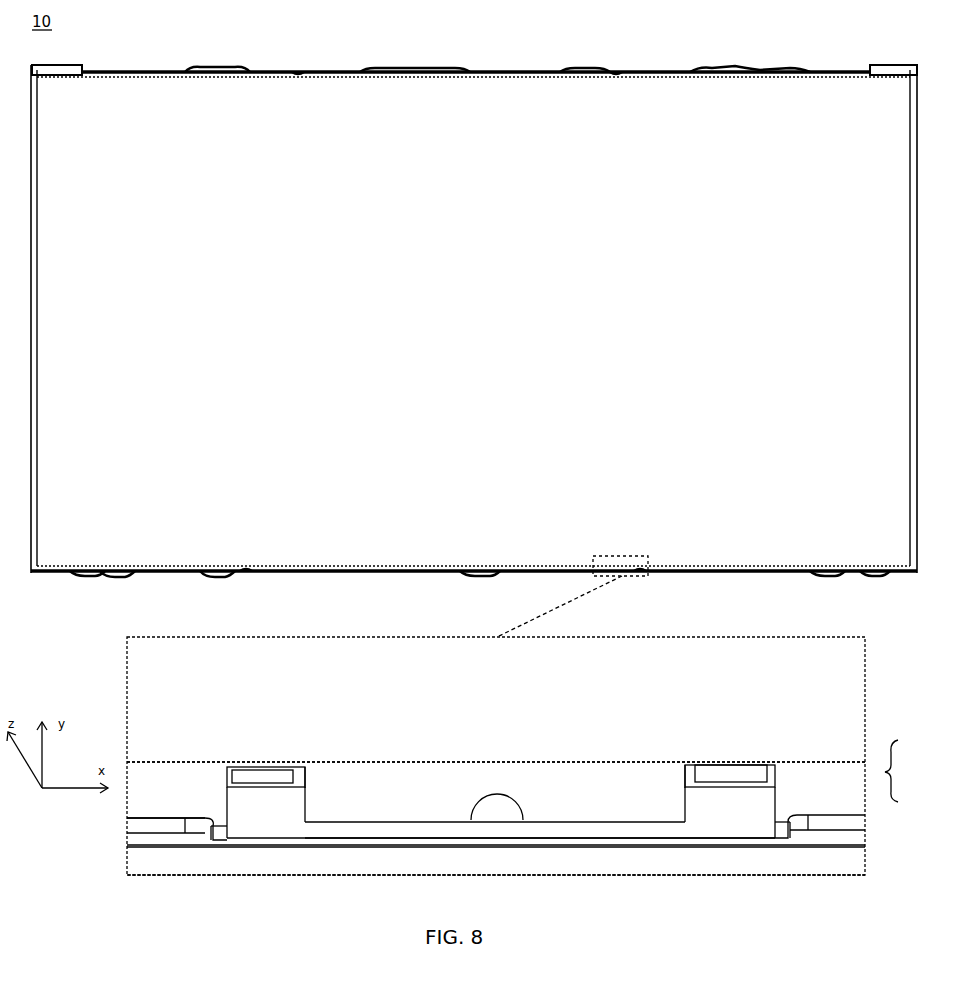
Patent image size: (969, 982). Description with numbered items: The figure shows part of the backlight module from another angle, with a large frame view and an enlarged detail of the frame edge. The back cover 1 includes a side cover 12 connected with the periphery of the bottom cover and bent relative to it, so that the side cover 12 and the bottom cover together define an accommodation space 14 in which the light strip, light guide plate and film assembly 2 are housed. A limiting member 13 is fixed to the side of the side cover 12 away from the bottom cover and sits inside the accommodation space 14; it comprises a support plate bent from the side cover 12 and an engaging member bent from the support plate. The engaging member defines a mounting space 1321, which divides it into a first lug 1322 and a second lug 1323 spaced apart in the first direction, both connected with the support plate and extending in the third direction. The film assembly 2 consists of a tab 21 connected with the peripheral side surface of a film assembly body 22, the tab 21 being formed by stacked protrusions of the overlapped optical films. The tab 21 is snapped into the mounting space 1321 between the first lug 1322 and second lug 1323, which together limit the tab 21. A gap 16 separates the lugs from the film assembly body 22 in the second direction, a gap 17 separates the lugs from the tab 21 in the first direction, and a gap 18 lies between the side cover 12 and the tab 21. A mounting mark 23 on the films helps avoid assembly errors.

The back cover 1 is at (643, 858).
The film assembly 2 is at (893, 771).
The side cover 12 is at (466, 845).
The limiting member 13 is at (298, 70).
The accommodation space 14 is at (145, 797).
The gap 16 is at (246, 764).
The gap 17 is at (306, 770).
The gap 18 is at (409, 832).
The tab 21 is at (357, 800).
The film assembly body 22 is at (443, 90).
The mounting mark 23 is at (498, 810).
The mounting space 1321 is at (690, 797).
The first lug 1322 is at (735, 770).
The second lug 1323 is at (240, 779).